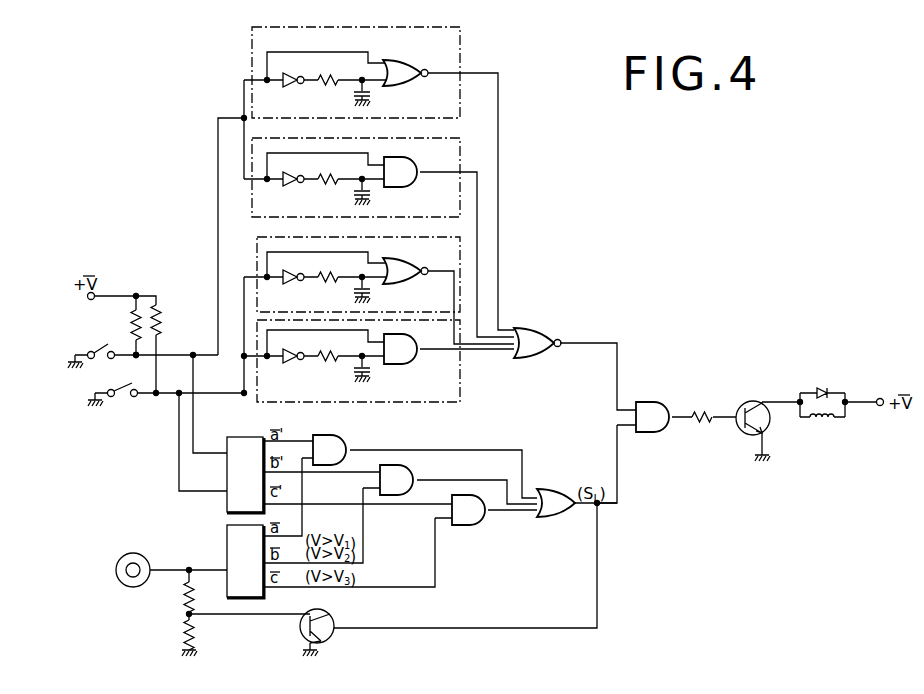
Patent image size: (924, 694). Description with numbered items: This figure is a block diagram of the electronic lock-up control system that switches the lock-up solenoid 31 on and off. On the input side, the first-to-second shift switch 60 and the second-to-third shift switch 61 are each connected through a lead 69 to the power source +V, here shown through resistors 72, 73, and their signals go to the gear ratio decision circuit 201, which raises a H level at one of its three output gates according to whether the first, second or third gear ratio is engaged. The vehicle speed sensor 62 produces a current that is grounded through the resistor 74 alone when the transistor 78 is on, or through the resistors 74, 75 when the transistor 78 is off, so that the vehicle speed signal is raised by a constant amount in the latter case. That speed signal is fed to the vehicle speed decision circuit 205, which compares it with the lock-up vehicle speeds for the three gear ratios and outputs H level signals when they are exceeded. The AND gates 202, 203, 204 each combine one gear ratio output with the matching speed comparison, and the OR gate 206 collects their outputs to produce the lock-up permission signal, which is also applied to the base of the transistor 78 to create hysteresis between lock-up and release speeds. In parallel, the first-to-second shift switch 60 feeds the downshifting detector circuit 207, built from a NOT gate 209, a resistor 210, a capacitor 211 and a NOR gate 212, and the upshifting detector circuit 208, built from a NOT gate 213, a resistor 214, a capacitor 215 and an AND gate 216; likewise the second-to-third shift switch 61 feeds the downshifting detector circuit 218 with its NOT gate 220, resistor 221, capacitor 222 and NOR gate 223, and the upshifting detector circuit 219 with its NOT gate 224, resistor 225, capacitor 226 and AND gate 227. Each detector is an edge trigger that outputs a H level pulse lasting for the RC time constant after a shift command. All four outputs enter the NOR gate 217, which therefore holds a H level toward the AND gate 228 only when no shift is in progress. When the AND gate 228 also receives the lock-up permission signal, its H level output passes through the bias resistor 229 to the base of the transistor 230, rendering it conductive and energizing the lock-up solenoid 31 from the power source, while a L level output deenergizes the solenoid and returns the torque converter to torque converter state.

The 2-1 downshifting detector circuit 207 is at (462, 43).
The 1-2 upshifting detector circuit 208 is at (473, 139).
The 3-2 downshifting detector circuit 218 is at (464, 262).
The 2-3 upshifting detector circuit 219 is at (462, 381).
The NOT gate 209 is at (290, 88).
The resistor 210 is at (328, 85).
The capacitor 211 is at (372, 96).
The NOR gate 212 is at (418, 54).
The NOT gate 213 is at (288, 188).
The resistor 214 is at (328, 188).
The capacitor 215 is at (369, 196).
The AND gate 216 is at (414, 185).
The NOT gate 220 is at (288, 282).
The resistor 221 is at (328, 282).
The capacitor 222 is at (372, 292).
The NOR gate 223 is at (405, 263).
The NOT gate 224 is at (288, 362).
The resistor 225 is at (328, 362).
The capacitor 226 is at (372, 376).
The AND gate 227 is at (418, 361).
The NOR gate 217 is at (538, 328).
The AND gate 228 is at (650, 402).
The bias resistor 229 is at (703, 422).
The transistor 230 is at (750, 401).
The lock-up solenoid 31 is at (822, 420).
The resistor 72 is at (138, 312).
The resistor 73 is at (160, 318).
The 1-2 shift switch 60 is at (103, 342).
The lead 69 is at (138, 357).
The 2-3 shift switch 61 is at (128, 396).
The gear ratio decision circuit 201 is at (243, 436).
The vehicle speed decision circuit 205 is at (226, 537).
The AND gate 202 is at (347, 437).
The AND gate 203 is at (415, 468).
The AND gate 204 is at (470, 526).
The OR gate 206 is at (555, 518).
The vehicle speed sensor 62 is at (133, 553).
The resistor 74 is at (187, 590).
The resistor 75 is at (186, 633).
The transistor 78 is at (330, 616).